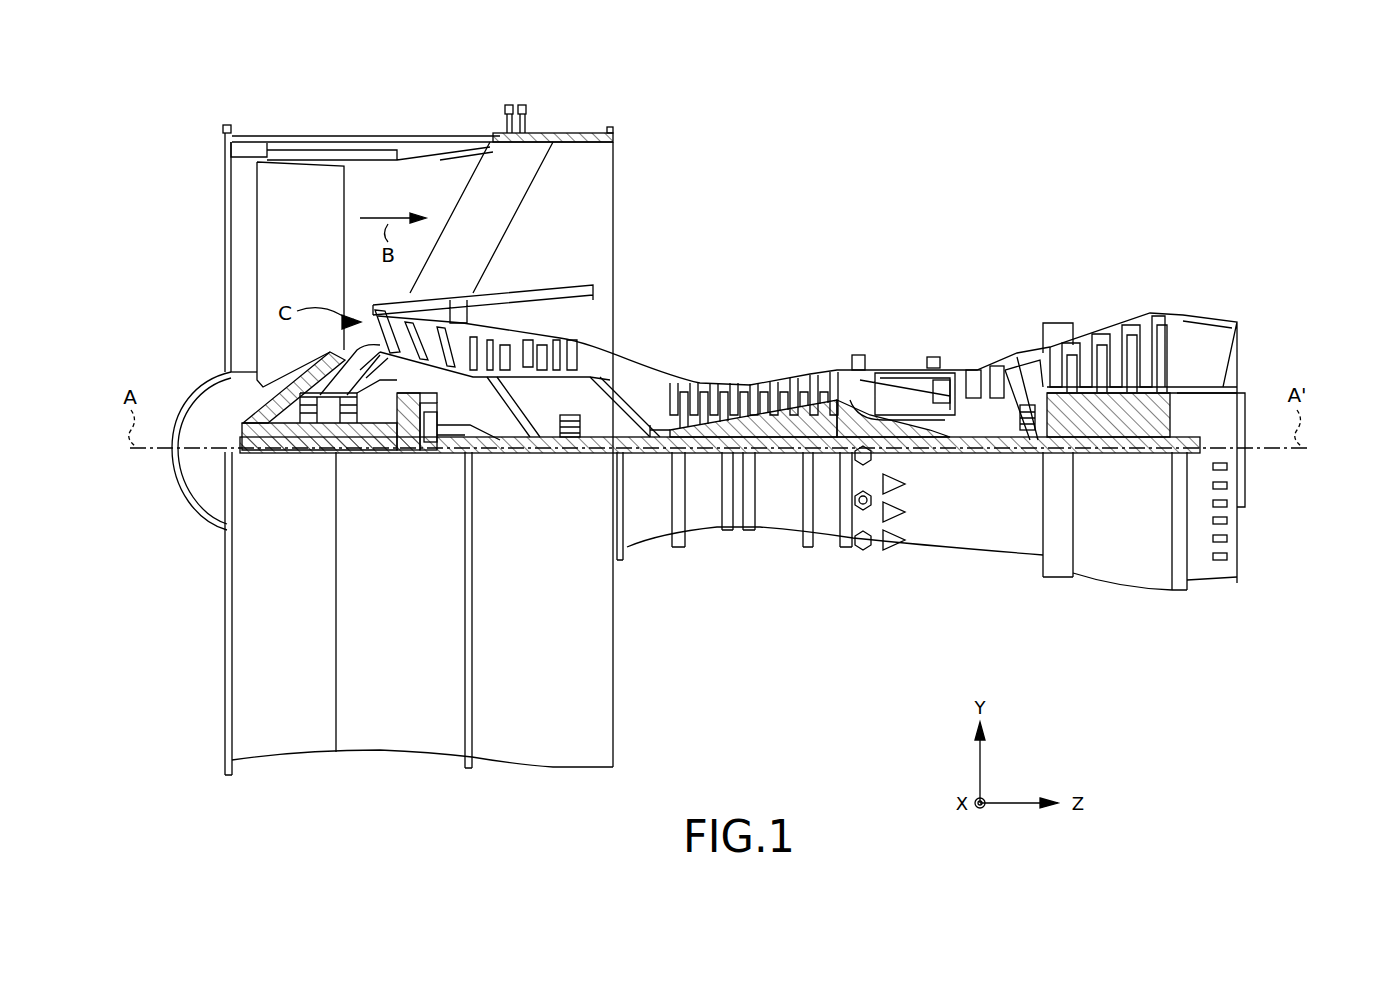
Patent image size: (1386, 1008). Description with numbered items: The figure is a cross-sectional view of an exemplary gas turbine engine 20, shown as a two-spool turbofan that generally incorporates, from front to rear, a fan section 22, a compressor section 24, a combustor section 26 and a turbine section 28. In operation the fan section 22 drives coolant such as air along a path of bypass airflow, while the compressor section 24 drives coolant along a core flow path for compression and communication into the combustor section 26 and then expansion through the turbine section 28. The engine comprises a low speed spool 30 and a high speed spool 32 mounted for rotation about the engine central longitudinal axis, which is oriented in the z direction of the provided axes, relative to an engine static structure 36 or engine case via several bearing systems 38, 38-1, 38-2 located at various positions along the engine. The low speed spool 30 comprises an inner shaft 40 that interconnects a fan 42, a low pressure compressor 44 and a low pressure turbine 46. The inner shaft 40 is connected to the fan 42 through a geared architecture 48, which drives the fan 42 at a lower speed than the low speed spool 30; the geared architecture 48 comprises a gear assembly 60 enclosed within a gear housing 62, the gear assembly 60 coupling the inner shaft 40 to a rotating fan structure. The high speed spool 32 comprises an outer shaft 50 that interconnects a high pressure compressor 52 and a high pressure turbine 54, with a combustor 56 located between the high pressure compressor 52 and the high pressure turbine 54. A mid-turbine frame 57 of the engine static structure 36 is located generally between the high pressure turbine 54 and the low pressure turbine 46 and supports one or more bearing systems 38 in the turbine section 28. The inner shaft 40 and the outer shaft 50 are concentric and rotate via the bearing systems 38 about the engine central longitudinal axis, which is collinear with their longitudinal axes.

The gas turbine engine 20 is at (963, 157).
The fan section 22 is at (465, 112).
The compressor section 24 is at (470, 246).
The combustor section 26 is at (960, 246).
The turbine section 28 is at (1178, 246).
The low speed spool 30 is at (783, 465).
The high speed spool 32 is at (826, 400).
The engine static structure 36 is at (830, 535).
The bearing system 38 is at (1020, 432).
The bearing system 38-1 is at (312, 436).
The bearing system 38-2 is at (570, 438).
The inner shaft 40 is at (633, 452).
The fan 42 is at (284, 263).
The low pressure compressor 44 is at (550, 345).
The low pressure turbine 46 is at (1117, 330).
The geared architecture 48 is at (432, 471).
The outer shaft 50 is at (900, 432).
The high pressure compressor 52 is at (768, 418).
The high pressure turbine 54 is at (976, 366).
The combustor 56 is at (903, 385).
The mid-turbine frame 57 is at (1015, 360).
The gear assembly 60 is at (443, 425).
The gear housing 62 is at (420, 396).